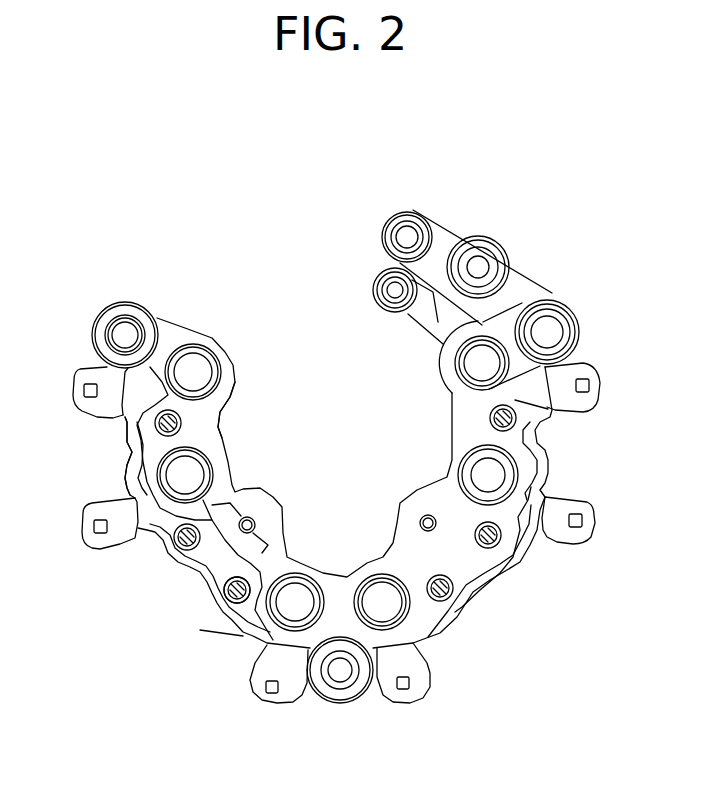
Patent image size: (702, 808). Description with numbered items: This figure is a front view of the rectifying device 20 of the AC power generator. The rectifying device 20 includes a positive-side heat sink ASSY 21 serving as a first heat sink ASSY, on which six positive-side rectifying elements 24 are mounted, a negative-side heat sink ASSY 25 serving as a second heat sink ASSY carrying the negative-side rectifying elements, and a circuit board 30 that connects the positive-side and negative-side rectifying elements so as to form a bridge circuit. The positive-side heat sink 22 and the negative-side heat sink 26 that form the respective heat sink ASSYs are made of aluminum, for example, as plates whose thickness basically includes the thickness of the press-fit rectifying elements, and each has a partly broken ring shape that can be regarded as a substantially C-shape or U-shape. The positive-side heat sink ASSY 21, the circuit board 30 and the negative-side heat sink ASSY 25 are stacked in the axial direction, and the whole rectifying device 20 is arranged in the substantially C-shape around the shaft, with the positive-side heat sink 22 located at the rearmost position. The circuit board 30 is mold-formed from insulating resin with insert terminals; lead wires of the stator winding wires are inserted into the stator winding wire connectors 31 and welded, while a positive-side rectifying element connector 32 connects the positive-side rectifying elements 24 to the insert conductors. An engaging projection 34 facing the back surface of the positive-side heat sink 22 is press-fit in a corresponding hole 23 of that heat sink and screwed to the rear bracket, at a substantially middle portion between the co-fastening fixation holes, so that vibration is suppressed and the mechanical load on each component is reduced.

The rectifying device 20 is at (134, 201).
The positive-side heat sink ASSY 21 is at (234, 372).
The positive-side heat sink 22 is at (220, 423).
The hole 23 is at (426, 516).
The positive-side rectifying element 24 is at (477, 373).
The negative-side heat sink ASSY 25 is at (125, 465).
The negative-side heat sink 26 is at (152, 548).
The circuit board 30 is at (85, 415).
The stator winding wire connector 31 is at (260, 692).
The positive-side rectifying element connector 32 is at (224, 592).
The engaging projection 34 is at (252, 518).